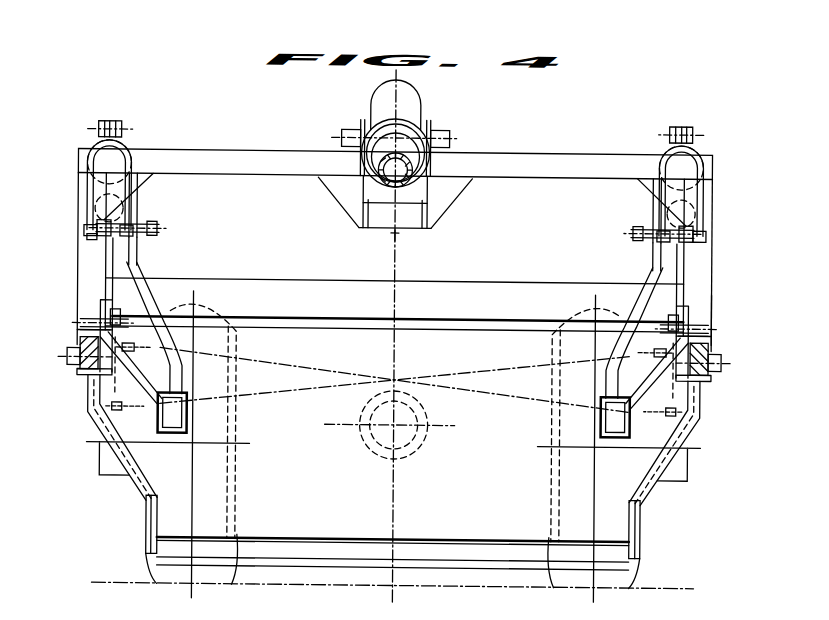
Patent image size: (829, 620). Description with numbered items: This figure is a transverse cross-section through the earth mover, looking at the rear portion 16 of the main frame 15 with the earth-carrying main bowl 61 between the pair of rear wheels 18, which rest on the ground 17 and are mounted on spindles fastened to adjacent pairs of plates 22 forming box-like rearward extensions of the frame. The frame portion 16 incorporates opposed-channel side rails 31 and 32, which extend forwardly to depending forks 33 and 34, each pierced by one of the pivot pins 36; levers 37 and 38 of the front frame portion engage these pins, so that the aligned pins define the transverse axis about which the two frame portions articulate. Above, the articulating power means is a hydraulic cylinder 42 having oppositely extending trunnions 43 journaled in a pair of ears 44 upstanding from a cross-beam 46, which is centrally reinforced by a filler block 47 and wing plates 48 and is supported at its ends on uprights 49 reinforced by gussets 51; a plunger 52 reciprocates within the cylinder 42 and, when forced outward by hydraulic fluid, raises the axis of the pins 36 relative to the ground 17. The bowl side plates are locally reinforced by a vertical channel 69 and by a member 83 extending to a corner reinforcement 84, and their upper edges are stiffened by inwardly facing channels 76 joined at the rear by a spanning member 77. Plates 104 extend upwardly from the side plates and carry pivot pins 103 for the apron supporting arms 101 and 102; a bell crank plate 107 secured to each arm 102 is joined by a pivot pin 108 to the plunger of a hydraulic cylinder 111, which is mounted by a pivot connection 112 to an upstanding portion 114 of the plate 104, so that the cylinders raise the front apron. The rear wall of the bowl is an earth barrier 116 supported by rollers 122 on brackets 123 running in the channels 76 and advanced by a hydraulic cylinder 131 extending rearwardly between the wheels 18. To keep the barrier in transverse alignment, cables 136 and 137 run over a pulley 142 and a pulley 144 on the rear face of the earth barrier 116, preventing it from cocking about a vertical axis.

The main frame 15 is at (711, 298).
The rear frame portion 16 is at (77, 288).
The ground 17 is at (342, 586).
The rear wheels 18 is at (150, 568).
The plates 22 is at (100, 478).
The side rail 31 is at (711, 281).
The side rail 32 is at (100, 306).
The depending fork 33 is at (708, 345).
The depending fork 34 is at (80, 344).
The pivot pins 36 is at (67, 363).
The lever 37 is at (700, 380).
The lever 38 is at (90, 379).
The cylinder 42 is at (418, 108).
The trunnions 43 is at (440, 136).
The ears 44 is at (360, 165).
The cross-beam 46 is at (543, 177).
The filler block 47 is at (411, 241).
The wing plates 48 is at (352, 215).
The uprights 49 is at (77, 212).
The gussets 51 is at (141, 188).
The plunger 52 is at (377, 175).
The main bowl 61 is at (190, 508).
The vertical channel 69 is at (147, 536).
The inwardly facing channels 76 is at (80, 326).
The spanning member 77 is at (322, 284).
The reinforcing member 83 is at (97, 430).
The corner reinforcement 84 is at (149, 508).
The supporting arm 101 is at (659, 259).
The supporting arm 102 is at (140, 265).
The pivot pins 103 is at (150, 229).
The plates 104 is at (105, 257).
The bell crank plate 107 is at (137, 245).
The pivot pin 108 is at (121, 130).
The hydraulic cylinder 111 is at (86, 192).
The pivot connection 112 is at (86, 240).
The upstanding portion 114 is at (112, 270).
The earth barrier 116 is at (318, 331).
The rollers 122 is at (145, 300).
The brackets 123 is at (125, 342).
The hydraulic cylinder 131 is at (420, 440).
The cable 136 is at (513, 369).
The cable 137 is at (285, 392).
The pulley 142 is at (172, 368).
The pulley 144 is at (135, 413).